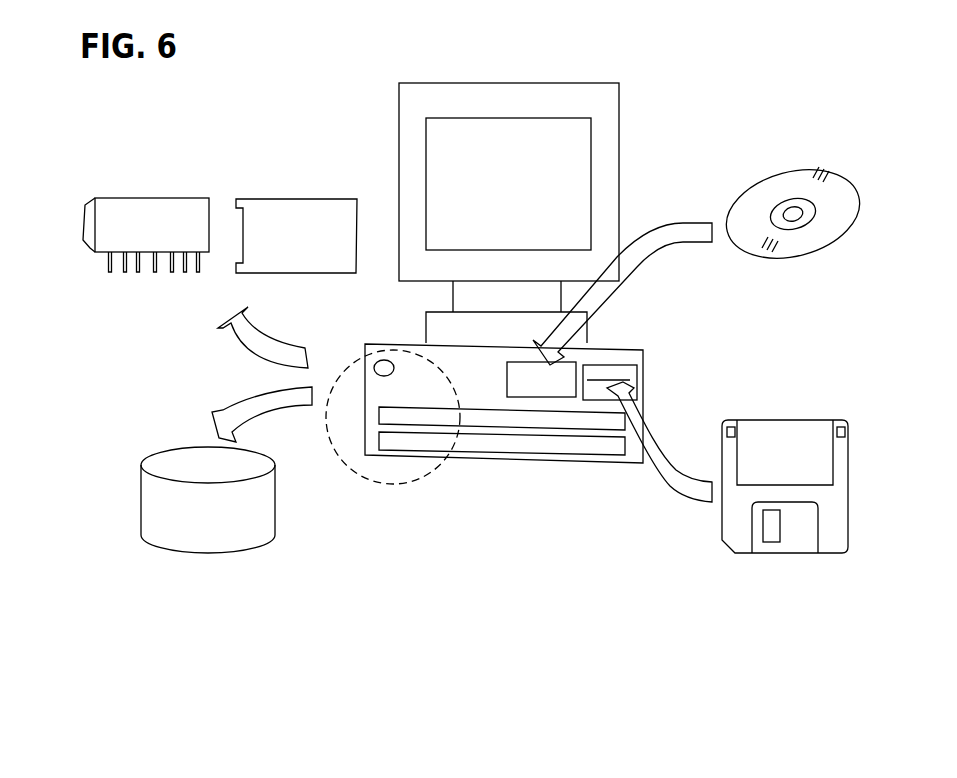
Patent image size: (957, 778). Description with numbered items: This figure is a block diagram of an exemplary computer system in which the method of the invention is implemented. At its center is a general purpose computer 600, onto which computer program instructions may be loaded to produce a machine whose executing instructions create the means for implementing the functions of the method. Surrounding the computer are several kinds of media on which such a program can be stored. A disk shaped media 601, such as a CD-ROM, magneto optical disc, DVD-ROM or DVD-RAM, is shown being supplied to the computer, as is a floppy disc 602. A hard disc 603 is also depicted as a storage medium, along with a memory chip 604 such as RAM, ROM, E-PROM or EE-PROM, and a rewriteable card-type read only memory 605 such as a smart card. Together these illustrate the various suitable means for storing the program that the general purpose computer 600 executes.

The general purpose computer 600 is at (620, 116).
The disk shaped media 601 is at (852, 180).
The floppy disc 602 is at (850, 438).
The hard disc 603 is at (140, 510).
The memory chip 604 is at (120, 195).
The rewriteable card-type read only memory 605 is at (268, 198).